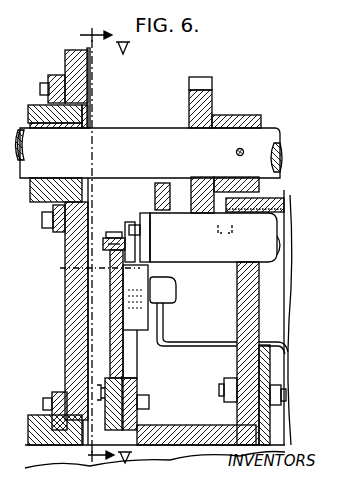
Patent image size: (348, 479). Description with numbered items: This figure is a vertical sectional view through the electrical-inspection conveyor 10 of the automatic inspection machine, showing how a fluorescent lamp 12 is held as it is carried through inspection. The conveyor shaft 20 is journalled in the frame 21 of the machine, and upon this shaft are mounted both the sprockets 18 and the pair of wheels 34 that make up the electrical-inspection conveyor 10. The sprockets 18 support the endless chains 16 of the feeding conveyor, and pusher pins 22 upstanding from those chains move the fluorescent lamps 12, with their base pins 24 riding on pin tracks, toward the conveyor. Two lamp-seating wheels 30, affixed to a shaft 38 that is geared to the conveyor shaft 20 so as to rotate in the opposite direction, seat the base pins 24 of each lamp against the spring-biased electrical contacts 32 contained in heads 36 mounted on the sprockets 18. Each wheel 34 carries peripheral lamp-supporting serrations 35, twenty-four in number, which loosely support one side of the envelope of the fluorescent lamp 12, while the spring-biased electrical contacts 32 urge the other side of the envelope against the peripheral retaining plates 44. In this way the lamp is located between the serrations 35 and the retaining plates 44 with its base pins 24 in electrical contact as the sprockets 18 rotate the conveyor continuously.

The electrical-inspection conveyor 10 is at (104, 300).
The fluorescent lamp 12 is at (257, 222).
The endless chains 16 is at (107, 232).
The sprockets 18 is at (112, 286).
The conveyor shaft 20 is at (30, 428).
The frame 21 is at (65, 60).
The pusher pins 22 is at (132, 224).
The base pins 24 is at (152, 246).
The lamp-seating wheels 30 is at (212, 96).
The spring-biased electrical contacts 32 is at (66, 270).
The wheels 34 is at (240, 292).
The peripheral lamp-supporting serrations 35 is at (230, 260).
The heads 36 is at (145, 330).
The shaft 38 is at (120, 128).
The peripheral retaining plates 44 is at (162, 183).